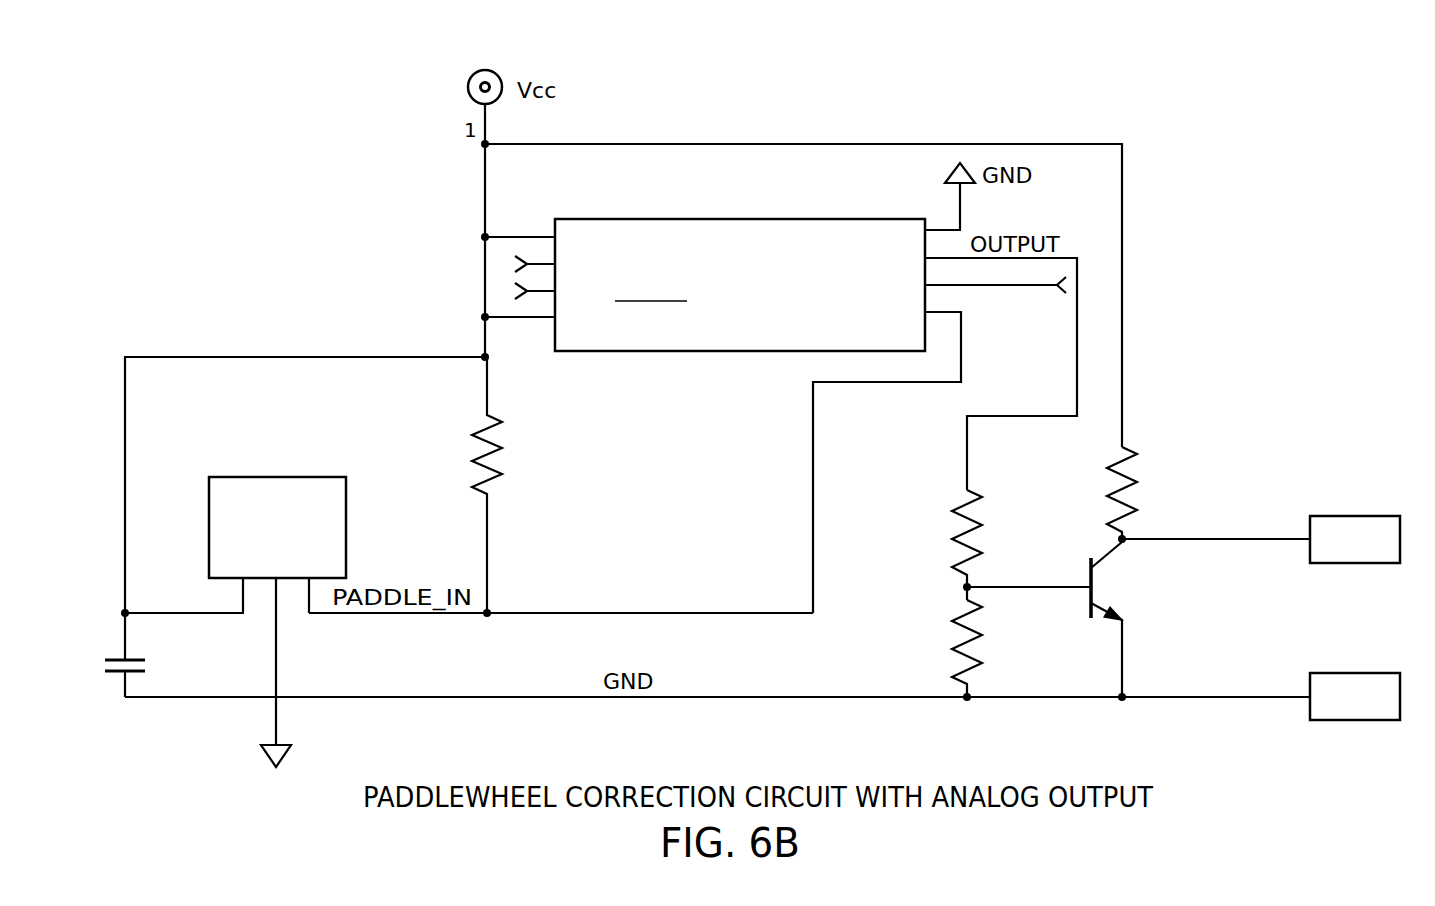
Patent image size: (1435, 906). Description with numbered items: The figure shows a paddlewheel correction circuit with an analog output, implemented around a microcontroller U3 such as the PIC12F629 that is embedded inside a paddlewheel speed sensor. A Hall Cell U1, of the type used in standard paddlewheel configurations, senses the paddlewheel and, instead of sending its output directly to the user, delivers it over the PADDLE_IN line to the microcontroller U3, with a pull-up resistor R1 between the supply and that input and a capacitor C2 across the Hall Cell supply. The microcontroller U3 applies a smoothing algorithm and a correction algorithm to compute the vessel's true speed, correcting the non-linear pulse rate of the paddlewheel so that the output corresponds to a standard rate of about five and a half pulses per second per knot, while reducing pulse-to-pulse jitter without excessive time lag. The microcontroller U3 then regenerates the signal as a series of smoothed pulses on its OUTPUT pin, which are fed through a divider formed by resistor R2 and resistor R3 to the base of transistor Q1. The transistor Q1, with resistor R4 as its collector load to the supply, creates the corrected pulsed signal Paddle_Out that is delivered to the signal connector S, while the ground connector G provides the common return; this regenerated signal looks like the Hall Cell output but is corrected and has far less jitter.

The microcontroller U3 is at (715, 265).
The Hall Cell U1 is at (235, 610).
The resistor R1 is at (501, 485).
The resistor R2 is at (980, 533).
The resistor R3 is at (984, 664).
The resistor R4 is at (1205, 487).
The capacitor C2 is at (141, 674).
The transistor Q1 is at (1044, 619).
The signal output connector S is at (1366, 539).
The ground connector G is at (1358, 695).